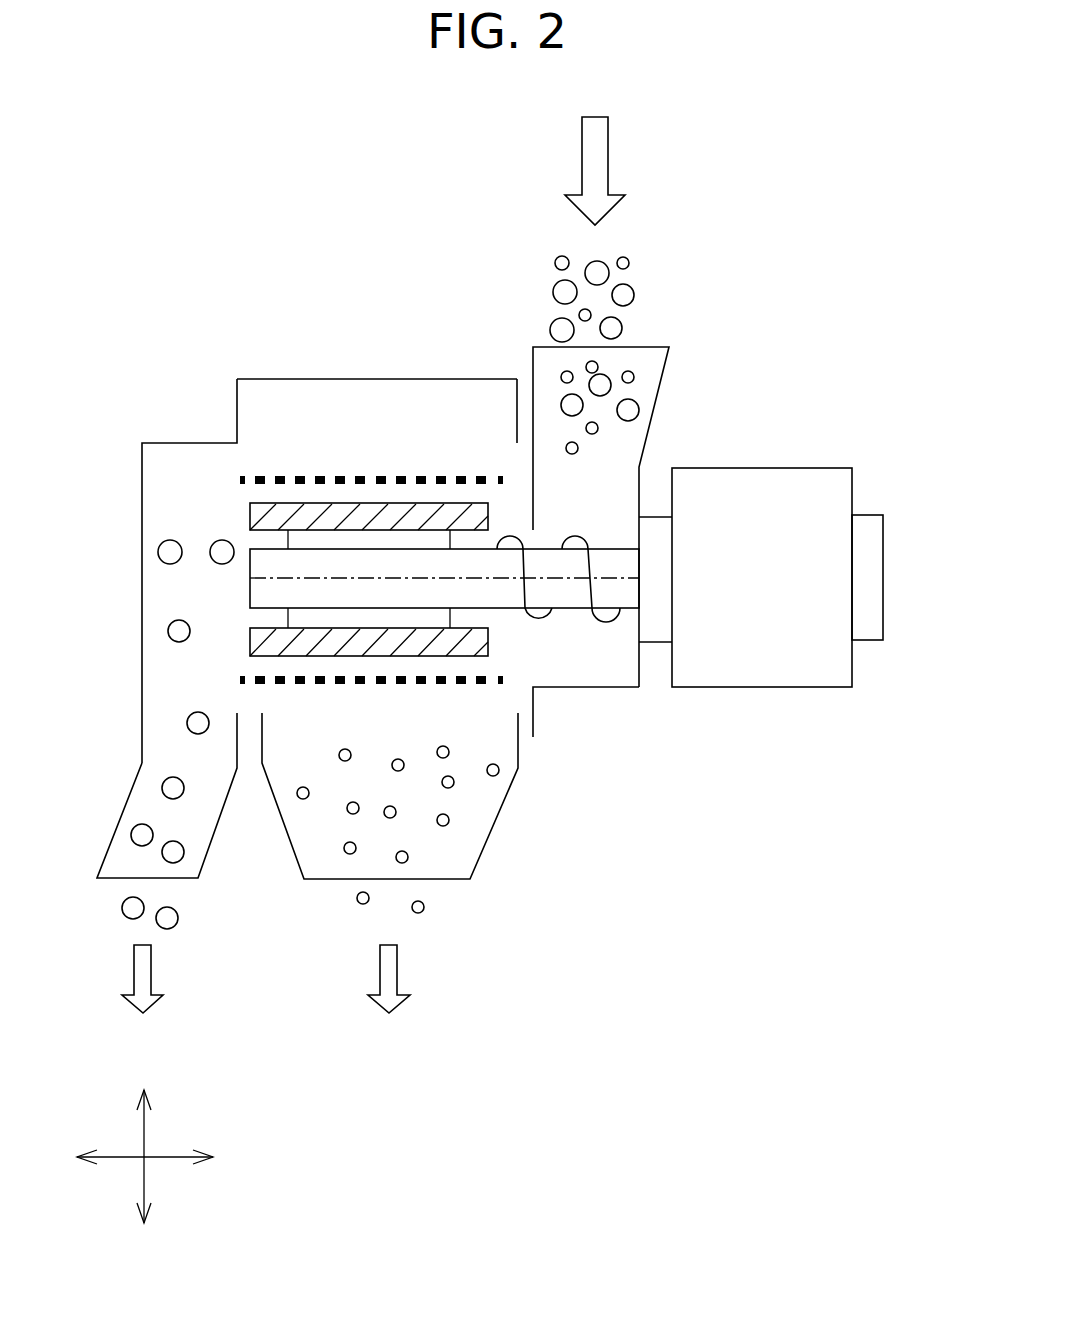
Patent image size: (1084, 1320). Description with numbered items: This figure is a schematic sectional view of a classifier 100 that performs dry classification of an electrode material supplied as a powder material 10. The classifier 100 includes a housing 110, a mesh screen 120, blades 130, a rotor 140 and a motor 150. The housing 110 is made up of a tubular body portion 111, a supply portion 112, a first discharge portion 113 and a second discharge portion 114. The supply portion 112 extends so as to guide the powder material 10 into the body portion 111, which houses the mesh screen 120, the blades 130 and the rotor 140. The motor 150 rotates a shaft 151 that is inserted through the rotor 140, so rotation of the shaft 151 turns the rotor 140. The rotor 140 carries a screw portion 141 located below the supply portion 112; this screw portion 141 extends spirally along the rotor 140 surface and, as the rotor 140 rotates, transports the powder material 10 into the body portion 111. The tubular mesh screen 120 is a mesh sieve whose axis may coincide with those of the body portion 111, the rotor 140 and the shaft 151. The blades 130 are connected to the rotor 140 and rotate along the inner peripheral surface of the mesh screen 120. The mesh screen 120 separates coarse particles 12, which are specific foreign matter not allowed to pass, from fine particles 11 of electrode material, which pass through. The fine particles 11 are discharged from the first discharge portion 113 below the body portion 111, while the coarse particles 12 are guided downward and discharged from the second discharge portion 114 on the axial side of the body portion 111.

The classifier 100 is at (106, 208).
The housing 110 is at (290, 366).
The body portion 111 is at (365, 378).
The supply portion 112 is at (668, 362).
The first discharge portion 113 is at (495, 822).
The second discharge portion 114 is at (123, 817).
The mesh screen 120 is at (380, 475).
The blades 130 is at (250, 518).
The rotor 140 is at (250, 595).
The screw portion 141 is at (592, 612).
The motor 150 is at (885, 582).
The shaft 151 is at (610, 577).
The powder material 10 is at (632, 280).
The fine particles 11 is at (423, 908).
The coarse particles 12 is at (178, 920).